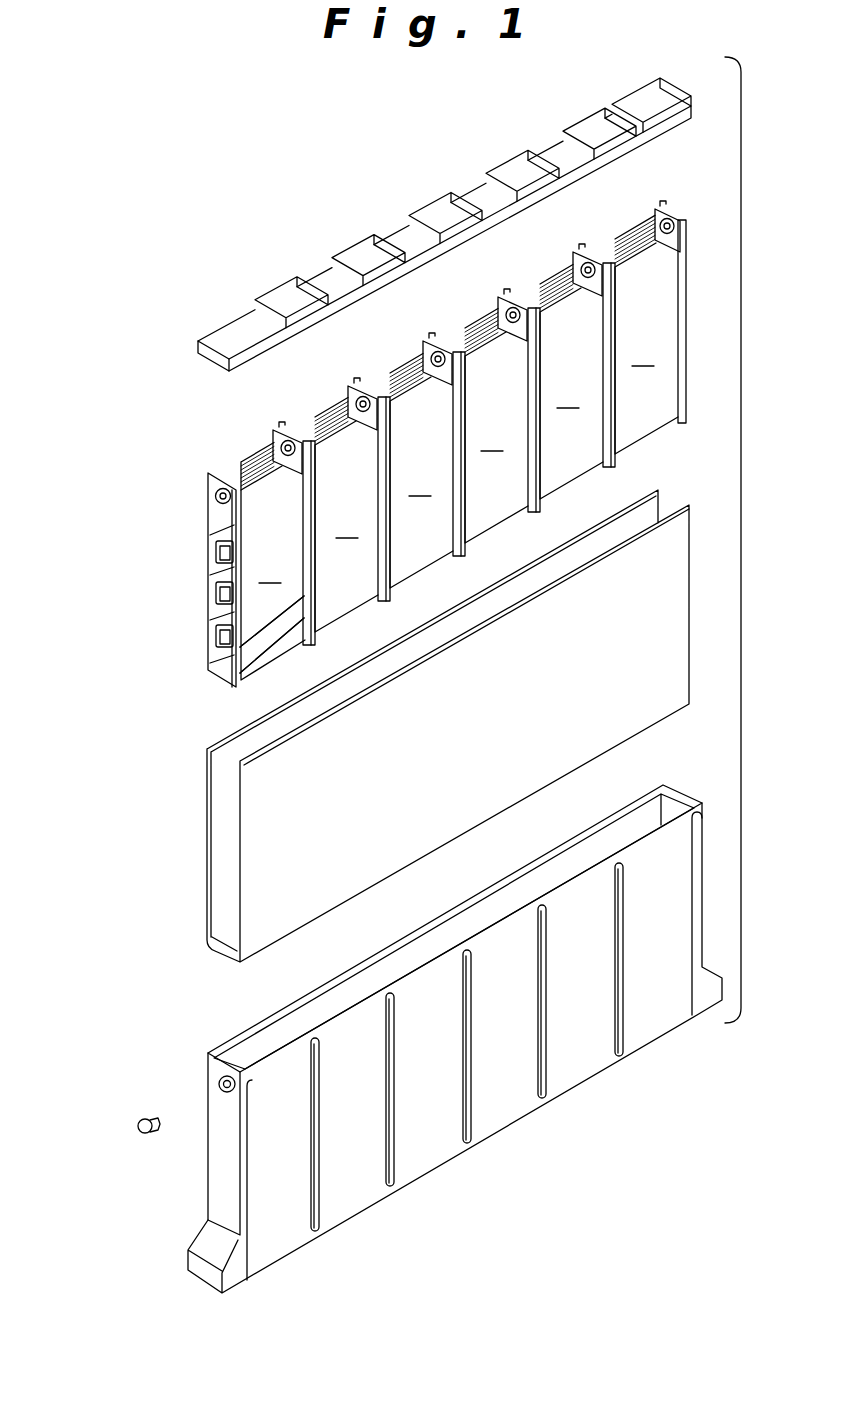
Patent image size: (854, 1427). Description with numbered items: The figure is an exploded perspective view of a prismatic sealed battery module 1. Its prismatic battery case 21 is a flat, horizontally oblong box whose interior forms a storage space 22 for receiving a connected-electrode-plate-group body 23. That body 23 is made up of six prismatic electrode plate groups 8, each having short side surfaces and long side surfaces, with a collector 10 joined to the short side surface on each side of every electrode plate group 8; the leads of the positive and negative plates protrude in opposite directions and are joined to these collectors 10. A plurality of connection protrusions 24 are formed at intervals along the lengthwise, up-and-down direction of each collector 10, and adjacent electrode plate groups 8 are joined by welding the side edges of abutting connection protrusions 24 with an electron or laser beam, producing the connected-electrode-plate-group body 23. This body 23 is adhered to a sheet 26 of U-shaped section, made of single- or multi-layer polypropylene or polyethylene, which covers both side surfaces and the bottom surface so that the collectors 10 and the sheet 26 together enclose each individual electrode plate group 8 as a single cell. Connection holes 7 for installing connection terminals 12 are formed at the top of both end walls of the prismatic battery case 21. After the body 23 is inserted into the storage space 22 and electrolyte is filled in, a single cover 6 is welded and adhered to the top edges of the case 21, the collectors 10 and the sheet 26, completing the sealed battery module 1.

The prismatic sealed battery module 1 is at (741, 517).
The cover 6 is at (292, 300).
The connection hole 7 is at (210, 1085).
The electrode plate group 8 is at (463, 440).
The collector 10 is at (247, 637).
The connection terminal 12 is at (142, 1134).
The prismatic battery case 21 is at (562, 1082).
The storage space 22 is at (276, 1034).
The connected-electrode-plate-group body 23 is at (190, 583).
The connection protrusion 24 is at (218, 632).
The sheet 26 is at (260, 858).